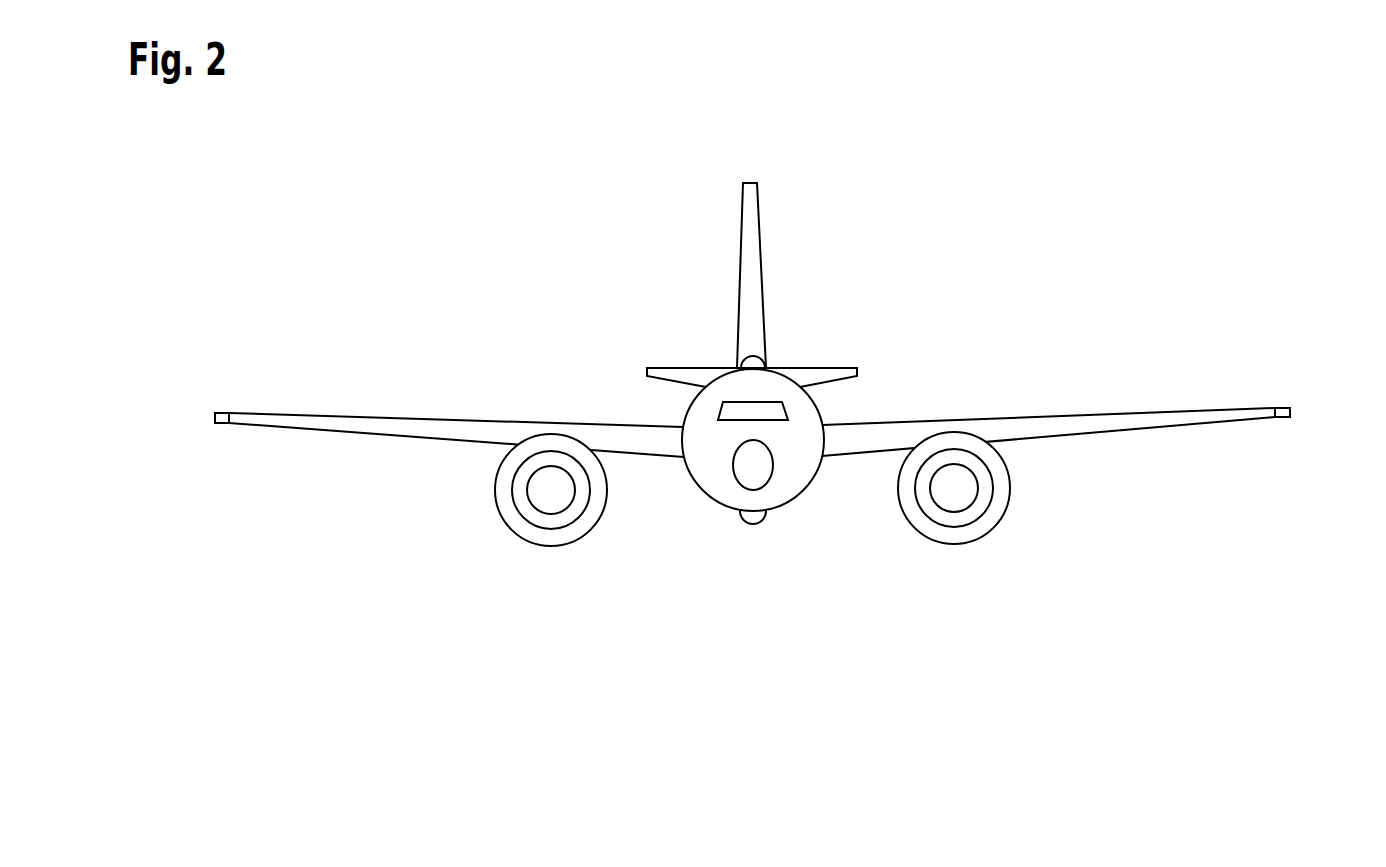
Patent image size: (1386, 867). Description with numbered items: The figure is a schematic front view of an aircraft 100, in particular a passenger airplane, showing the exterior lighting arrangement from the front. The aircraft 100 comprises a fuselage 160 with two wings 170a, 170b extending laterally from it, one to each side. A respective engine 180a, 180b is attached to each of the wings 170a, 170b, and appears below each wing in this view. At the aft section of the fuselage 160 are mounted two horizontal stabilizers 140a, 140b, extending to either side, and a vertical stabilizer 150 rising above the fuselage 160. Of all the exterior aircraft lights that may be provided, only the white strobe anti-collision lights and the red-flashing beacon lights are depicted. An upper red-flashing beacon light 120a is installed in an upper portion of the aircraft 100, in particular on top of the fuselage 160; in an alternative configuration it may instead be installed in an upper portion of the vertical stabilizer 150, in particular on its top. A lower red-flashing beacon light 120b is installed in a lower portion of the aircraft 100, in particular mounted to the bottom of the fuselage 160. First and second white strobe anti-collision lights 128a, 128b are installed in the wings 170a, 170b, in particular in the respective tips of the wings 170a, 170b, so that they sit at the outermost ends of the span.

The aircraft 100 is at (1055, 208).
The upper red-flashing beacon light 120a is at (748, 353).
The lower red-flashing beacon light 120b is at (757, 526).
The first white strobe anti-collision light 128a is at (222, 423).
The second white strobe anti-collision light 128b is at (1285, 417).
The horizontal stabilizer 140a is at (643, 365).
The horizontal stabilizer 140b is at (863, 363).
The vertical stabilizer 150 is at (750, 219).
The fuselage 160 is at (697, 507).
The wing 170a is at (337, 402).
The wing 170b is at (1167, 397).
The engine 180a is at (492, 507).
The engine 180b is at (1013, 505).